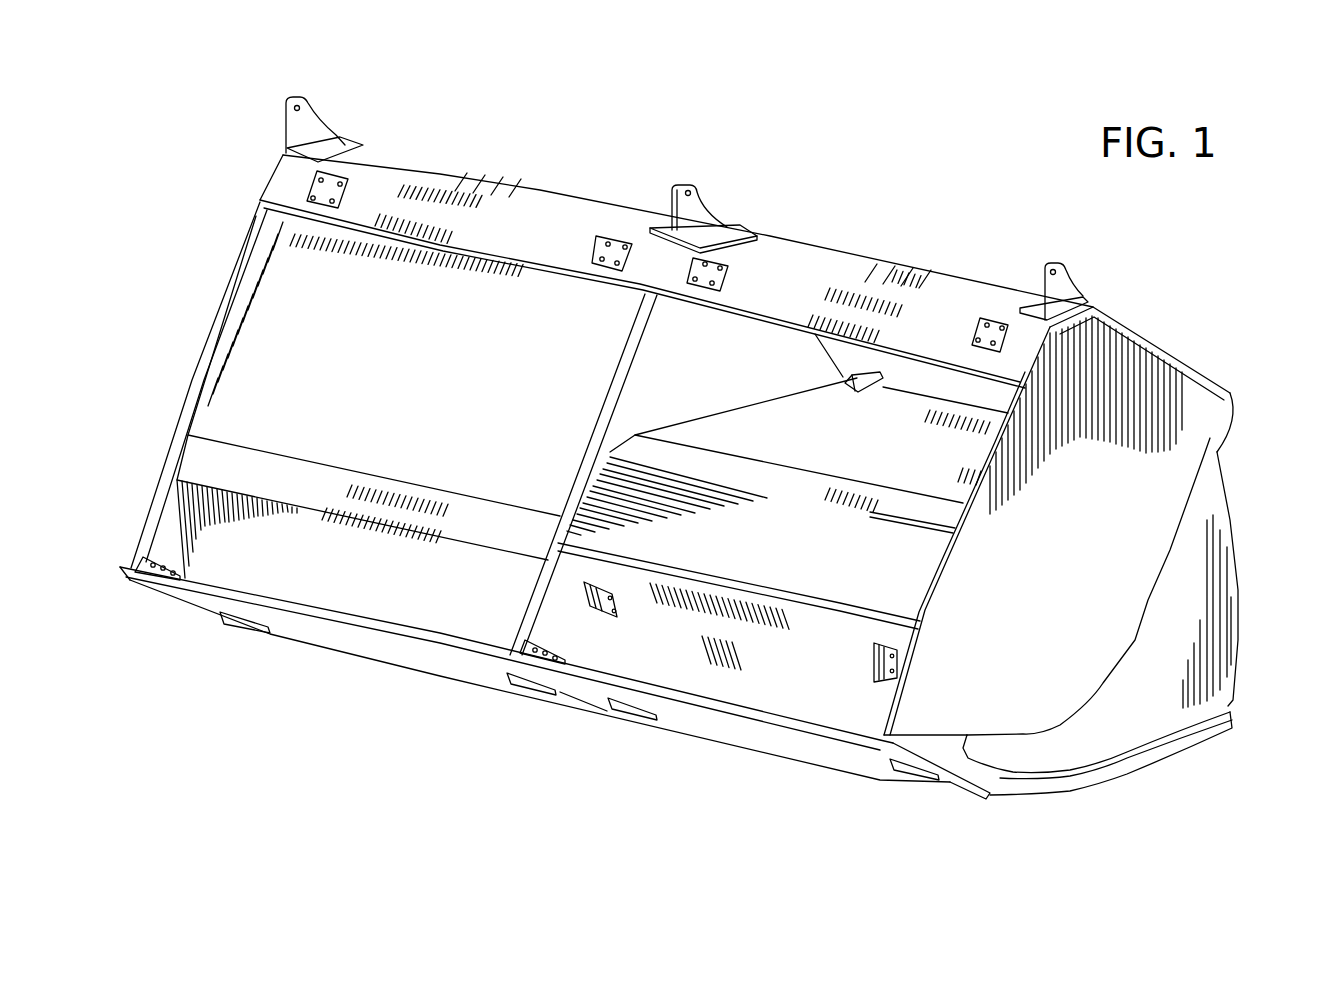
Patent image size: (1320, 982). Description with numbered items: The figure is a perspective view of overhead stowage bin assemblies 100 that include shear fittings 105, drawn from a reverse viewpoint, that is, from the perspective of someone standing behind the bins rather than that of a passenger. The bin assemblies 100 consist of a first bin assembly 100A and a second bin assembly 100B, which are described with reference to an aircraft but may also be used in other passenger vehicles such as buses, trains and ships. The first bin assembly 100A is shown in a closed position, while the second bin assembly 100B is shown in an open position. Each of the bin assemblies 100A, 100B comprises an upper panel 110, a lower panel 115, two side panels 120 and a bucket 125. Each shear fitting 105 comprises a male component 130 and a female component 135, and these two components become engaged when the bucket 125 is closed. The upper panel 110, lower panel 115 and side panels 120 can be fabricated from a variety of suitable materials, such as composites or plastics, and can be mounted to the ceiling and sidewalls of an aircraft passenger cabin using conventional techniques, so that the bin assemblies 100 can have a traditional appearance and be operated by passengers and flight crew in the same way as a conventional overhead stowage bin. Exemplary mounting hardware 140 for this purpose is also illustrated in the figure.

The overhead stowage bin assemblies 100 is at (706, 439).
The first bin assembly 100A is at (526, 162).
The second bin assembly 100B is at (912, 240).
The shear fitting 105 is at (305, 183).
The upper panel 110 is at (838, 262).
The lower panel 115 is at (770, 744).
The side panel 120 is at (1190, 456).
The bucket 125 is at (1128, 775).
The male component 130 is at (845, 392).
The female component 135 is at (995, 312).
The mounting hardware 140 is at (325, 118).